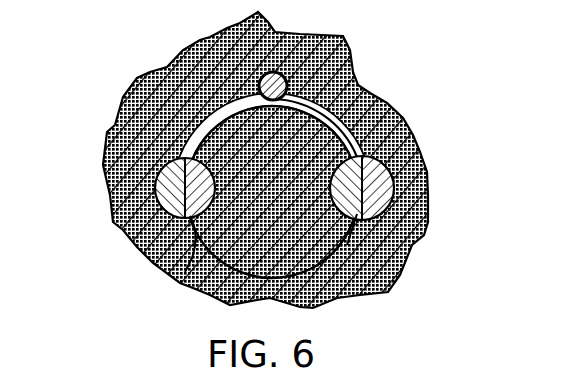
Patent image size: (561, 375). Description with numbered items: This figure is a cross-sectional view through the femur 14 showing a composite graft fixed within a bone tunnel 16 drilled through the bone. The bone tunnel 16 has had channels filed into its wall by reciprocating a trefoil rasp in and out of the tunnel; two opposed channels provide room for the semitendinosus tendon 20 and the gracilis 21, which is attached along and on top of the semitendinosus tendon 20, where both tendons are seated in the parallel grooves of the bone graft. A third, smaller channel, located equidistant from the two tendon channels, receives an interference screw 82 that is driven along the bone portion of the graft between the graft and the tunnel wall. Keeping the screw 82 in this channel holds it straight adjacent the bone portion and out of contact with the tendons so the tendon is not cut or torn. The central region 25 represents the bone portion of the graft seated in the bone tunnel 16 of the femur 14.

The femur 14 is at (200, 50).
The bone tunnel 16 is at (338, 98).
The semitendinosus tendon 20 is at (360, 150).
The gracilis 21 is at (167, 195).
The core member 25 is at (290, 206).
The screw 82 is at (283, 72).